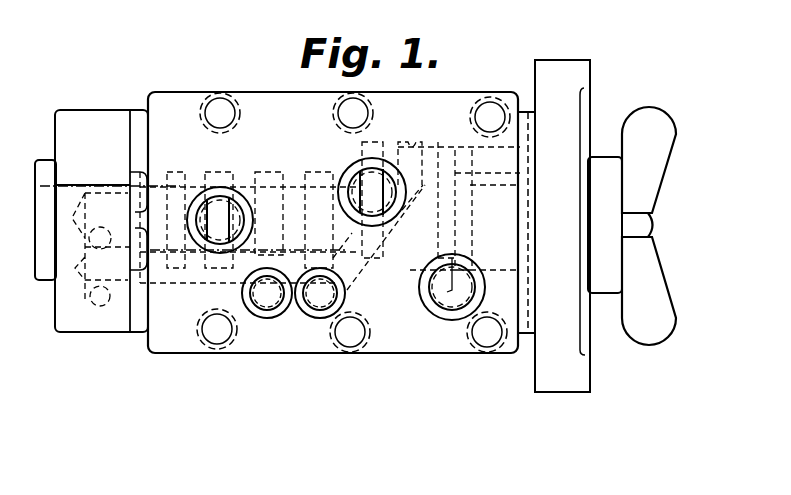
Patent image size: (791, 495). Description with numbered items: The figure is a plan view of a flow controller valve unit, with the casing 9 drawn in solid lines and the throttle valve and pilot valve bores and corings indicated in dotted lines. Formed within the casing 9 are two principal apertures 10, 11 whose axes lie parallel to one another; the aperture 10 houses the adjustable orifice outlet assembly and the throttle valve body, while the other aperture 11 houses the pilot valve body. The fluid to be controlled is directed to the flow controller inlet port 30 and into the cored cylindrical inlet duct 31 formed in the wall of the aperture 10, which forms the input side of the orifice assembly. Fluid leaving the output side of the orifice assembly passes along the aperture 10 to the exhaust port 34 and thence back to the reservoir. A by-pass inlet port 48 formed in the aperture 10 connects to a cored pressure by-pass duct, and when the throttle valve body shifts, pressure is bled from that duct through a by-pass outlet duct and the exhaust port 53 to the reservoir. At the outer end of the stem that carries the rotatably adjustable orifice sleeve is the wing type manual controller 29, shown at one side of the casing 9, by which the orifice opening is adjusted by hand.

The casing 9 is at (244, 91).
The aperture 10 is at (276, 195).
The aperture 11 is at (426, 147).
The cored cylindrical inlet duct 31 is at (446, 147).
The by-pass inlet port 48 is at (215, 235).
The exhaust port 53 is at (243, 294).
The exhaust port 34 is at (310, 313).
The flow controller inlet port 30 is at (441, 318).
The wing type manual controller 29 is at (662, 313).